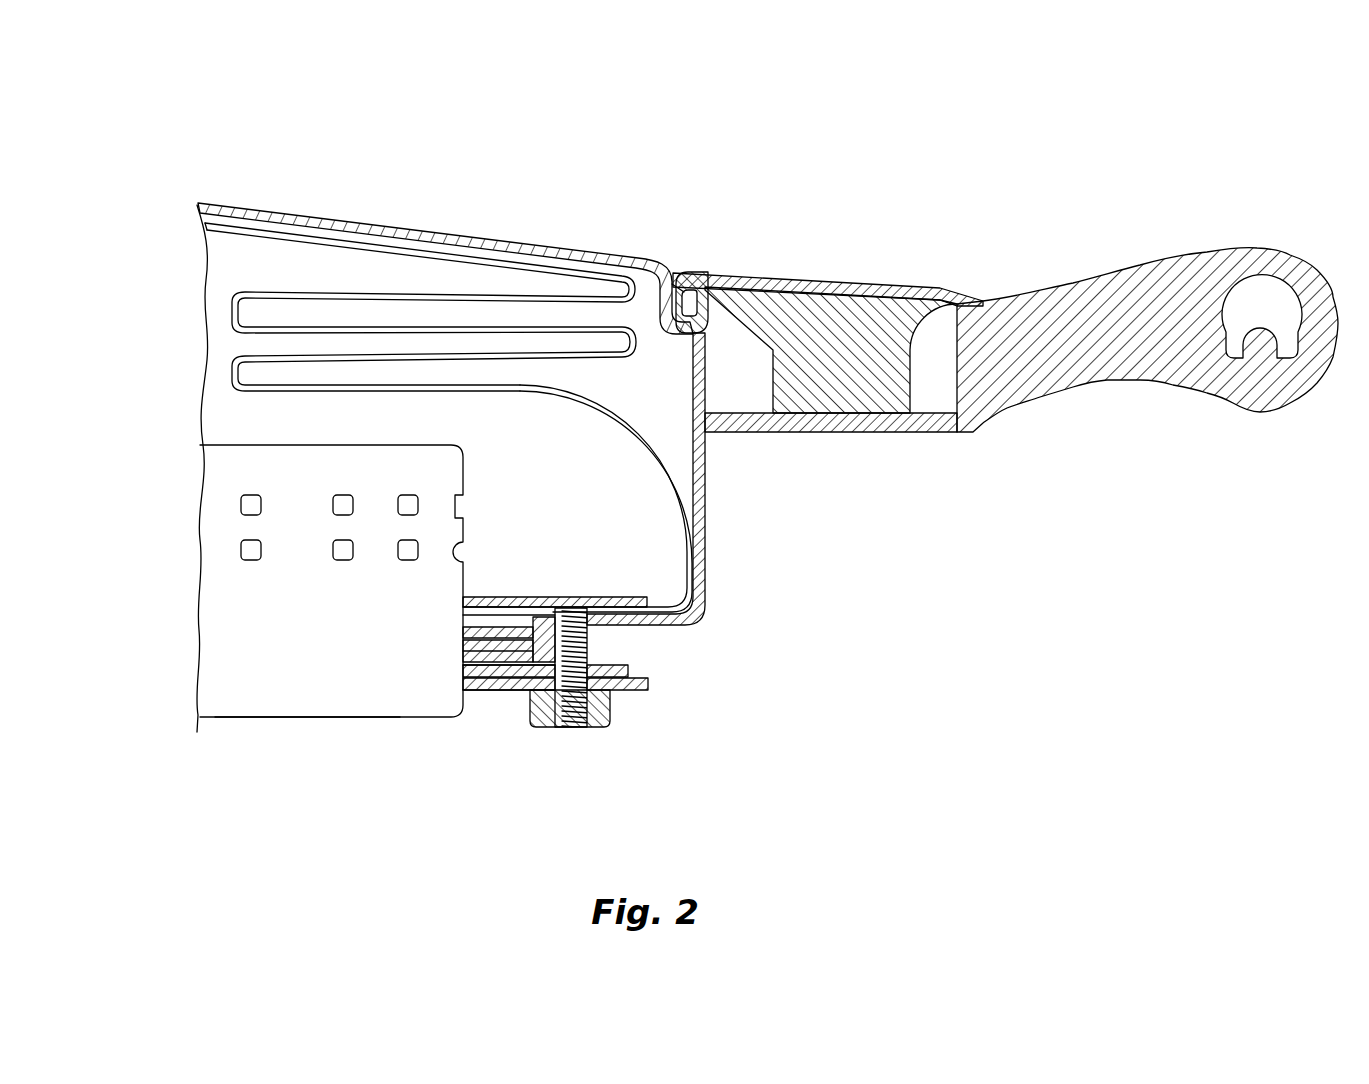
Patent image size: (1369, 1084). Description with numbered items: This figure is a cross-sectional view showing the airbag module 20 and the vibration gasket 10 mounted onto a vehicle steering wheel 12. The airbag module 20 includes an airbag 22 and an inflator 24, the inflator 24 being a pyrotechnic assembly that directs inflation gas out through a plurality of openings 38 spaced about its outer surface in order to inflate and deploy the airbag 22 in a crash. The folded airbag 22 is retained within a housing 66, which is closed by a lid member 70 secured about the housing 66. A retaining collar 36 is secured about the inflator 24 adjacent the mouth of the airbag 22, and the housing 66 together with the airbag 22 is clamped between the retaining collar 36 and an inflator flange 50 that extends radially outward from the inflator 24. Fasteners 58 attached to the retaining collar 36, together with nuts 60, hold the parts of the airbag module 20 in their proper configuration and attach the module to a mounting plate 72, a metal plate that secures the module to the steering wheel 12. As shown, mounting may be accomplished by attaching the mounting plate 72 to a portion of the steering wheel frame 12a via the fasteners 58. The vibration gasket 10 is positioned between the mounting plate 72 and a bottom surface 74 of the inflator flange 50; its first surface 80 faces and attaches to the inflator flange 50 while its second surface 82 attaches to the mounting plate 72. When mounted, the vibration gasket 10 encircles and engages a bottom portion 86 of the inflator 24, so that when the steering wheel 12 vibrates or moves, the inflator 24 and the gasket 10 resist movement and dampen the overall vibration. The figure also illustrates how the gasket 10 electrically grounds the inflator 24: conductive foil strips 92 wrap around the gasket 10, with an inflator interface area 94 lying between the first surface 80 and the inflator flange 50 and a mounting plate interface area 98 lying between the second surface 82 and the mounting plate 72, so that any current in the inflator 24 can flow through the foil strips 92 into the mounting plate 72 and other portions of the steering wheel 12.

The vibration gasket 10 is at (517, 690).
The vehicle steering wheel 12 is at (798, 278).
The steering wheel frame 12a is at (272, 687).
The airbag module 20 is at (324, 176).
The airbag 22 is at (612, 410).
The inflator 24 is at (313, 460).
The retaining collar 36 is at (625, 597).
The openings 38 is at (347, 547).
The inflator flange 50 is at (465, 632).
The fasteners 58 is at (567, 727).
The nuts 60 is at (607, 705).
The housing 66 is at (705, 480).
The lid member 70 is at (480, 232).
The mounting plate 72 is at (473, 690).
The bottom surface 74 is at (465, 648).
The first surface 80 is at (500, 637).
The second surface 82 is at (503, 690).
The bottom portion 86 is at (240, 617).
The foil strips 92 is at (537, 728).
The inflator interface area 94 is at (524, 637).
The mounting plate interface area 98 is at (527, 690).